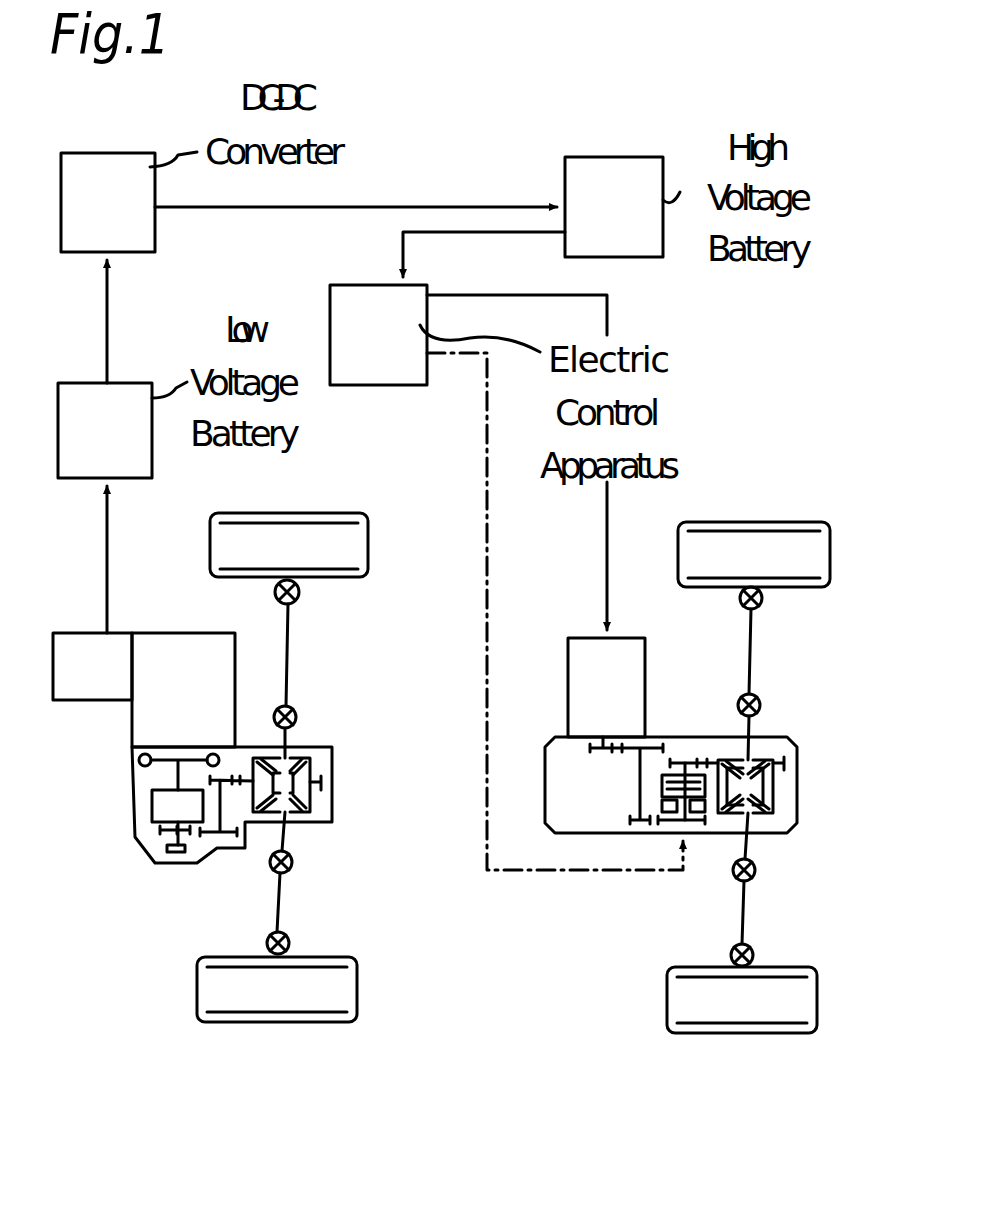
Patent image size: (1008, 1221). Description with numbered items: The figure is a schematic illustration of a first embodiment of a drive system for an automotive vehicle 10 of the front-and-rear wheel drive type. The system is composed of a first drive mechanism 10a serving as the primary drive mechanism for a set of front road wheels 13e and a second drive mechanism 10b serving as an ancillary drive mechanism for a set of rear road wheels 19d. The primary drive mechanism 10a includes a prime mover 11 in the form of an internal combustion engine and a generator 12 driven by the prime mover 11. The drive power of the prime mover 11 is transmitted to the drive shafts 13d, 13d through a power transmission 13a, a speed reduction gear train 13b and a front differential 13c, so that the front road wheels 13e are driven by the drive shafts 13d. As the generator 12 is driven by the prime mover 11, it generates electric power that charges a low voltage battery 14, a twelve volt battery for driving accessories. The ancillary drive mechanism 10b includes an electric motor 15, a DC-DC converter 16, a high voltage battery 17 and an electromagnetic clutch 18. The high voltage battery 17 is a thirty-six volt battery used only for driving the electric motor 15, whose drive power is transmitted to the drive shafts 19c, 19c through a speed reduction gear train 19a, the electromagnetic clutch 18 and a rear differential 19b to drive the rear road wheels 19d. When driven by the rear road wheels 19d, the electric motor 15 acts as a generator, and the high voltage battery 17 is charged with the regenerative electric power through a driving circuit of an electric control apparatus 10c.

The automotive vehicle 10 is at (456, 983).
The first drive mechanism 10a is at (235, 819).
The second drive mechanism 10b is at (715, 791).
The electric control apparatus 10c is at (406, 345).
The prime mover 11 is at (177, 644).
The generator 12 is at (86, 690).
The power transmission 13a is at (152, 803).
The speed reduction gear train 13b is at (203, 838).
The front differential 13c is at (323, 764).
The drive shafts 13d is at (290, 657).
The front road wheels 13e is at (284, 528).
The low voltage battery 14 is at (120, 443).
The electric motor 15 is at (583, 653).
The DC-DC converter 16 is at (122, 214).
The high voltage battery 17 is at (630, 215).
The electromagnetic clutch 18 is at (697, 828).
The speed reduction gear train 19a is at (666, 743).
The rear differential 19b is at (767, 753).
The drive shafts 19c is at (753, 642).
The rear road wheels 19d is at (751, 540).